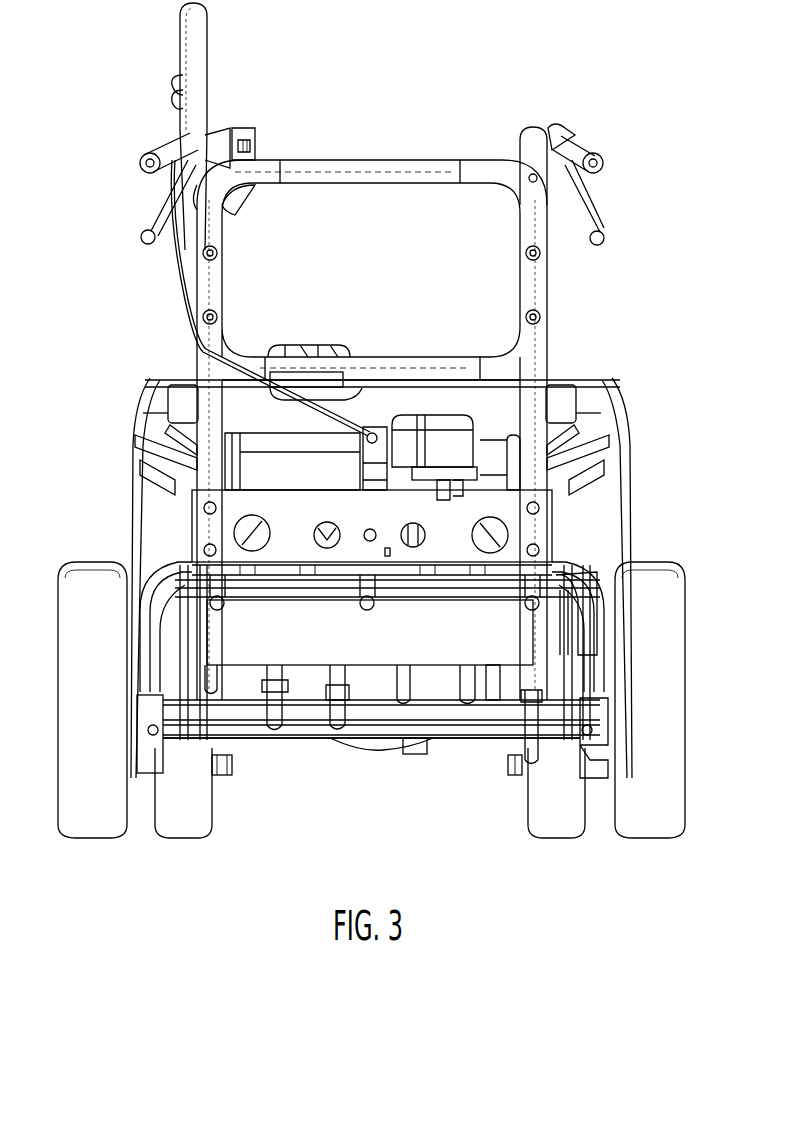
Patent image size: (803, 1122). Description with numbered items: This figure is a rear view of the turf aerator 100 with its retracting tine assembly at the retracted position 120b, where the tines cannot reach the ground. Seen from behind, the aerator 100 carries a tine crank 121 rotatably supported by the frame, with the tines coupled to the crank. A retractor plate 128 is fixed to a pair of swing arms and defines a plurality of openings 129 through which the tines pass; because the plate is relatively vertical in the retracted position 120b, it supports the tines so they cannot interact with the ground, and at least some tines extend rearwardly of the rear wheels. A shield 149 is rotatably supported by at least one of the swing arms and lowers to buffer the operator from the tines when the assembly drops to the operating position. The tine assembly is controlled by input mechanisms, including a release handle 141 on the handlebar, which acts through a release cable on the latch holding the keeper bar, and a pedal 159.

The turf aerator 100 is at (580, 92).
The release handle 141 is at (197, 58).
The pedal 159 is at (457, 477).
The openings 129 is at (563, 610).
The shield 149 is at (390, 647).
The tine crank 121 is at (273, 722).
The retractor plate 128 is at (493, 683).
The retracted position 120b is at (355, 776).